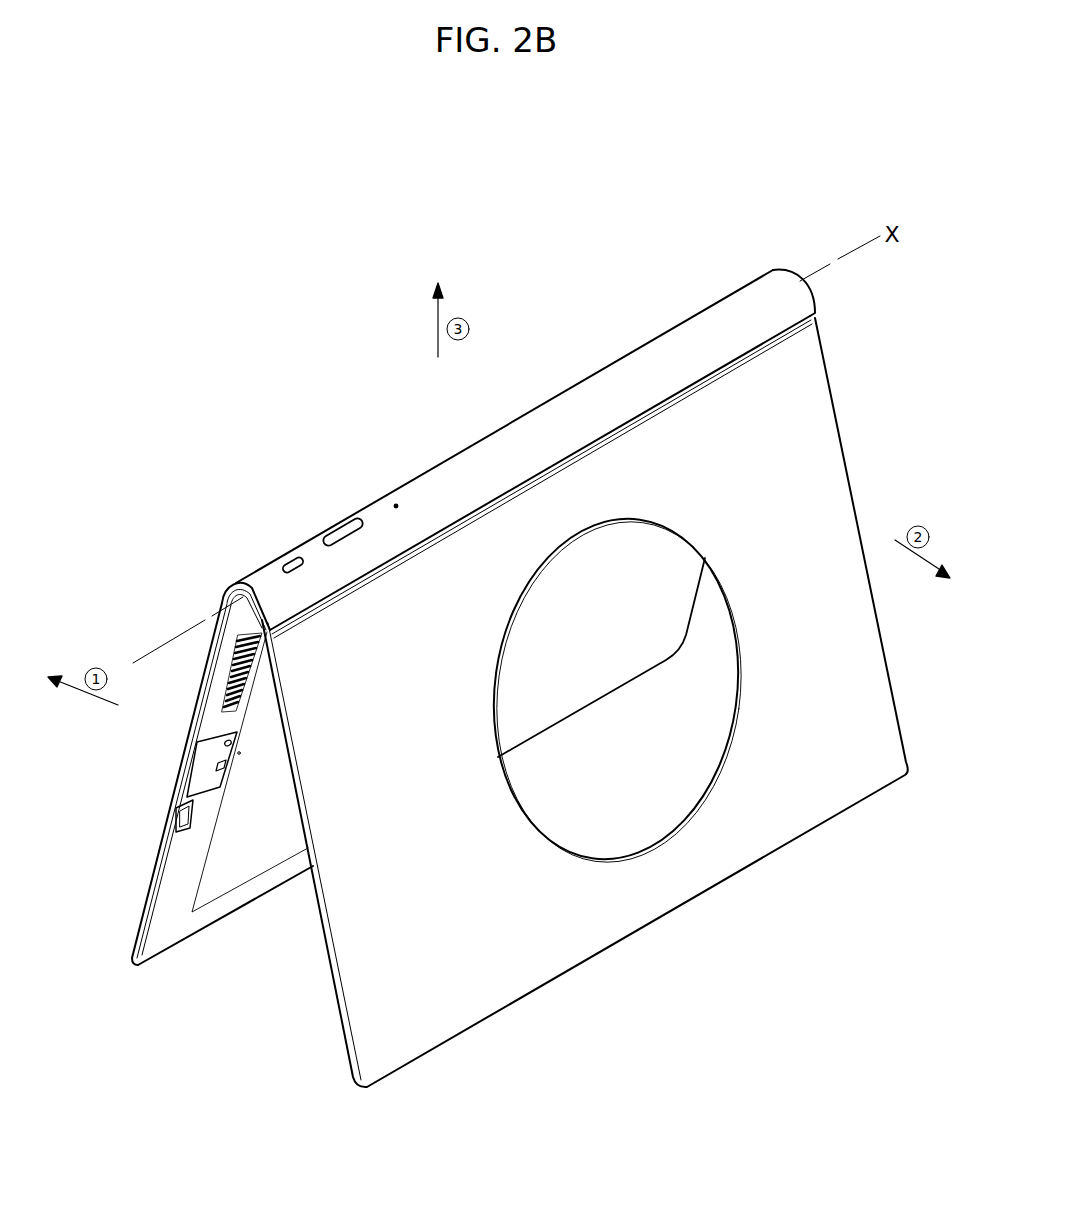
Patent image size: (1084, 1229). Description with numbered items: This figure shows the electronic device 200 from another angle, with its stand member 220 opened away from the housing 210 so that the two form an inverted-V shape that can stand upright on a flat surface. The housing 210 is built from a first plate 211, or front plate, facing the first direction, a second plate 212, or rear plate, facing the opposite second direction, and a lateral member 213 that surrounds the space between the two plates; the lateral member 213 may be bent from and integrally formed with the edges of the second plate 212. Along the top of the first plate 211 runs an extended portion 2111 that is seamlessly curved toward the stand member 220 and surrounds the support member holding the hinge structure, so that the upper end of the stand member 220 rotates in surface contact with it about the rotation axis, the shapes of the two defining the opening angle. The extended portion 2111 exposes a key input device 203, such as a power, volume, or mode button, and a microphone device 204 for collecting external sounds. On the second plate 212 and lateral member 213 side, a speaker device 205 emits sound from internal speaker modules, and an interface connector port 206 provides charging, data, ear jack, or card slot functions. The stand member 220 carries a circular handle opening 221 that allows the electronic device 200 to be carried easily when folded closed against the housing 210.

The electronic device 200 is at (206, 451).
The extended portion 2111 is at (598, 396).
The key input device 203 is at (343, 533).
The microphone device 204 is at (396, 504).
The speaker device 205 is at (230, 660).
The interface connector port 206 is at (215, 765).
The housing 210 is at (173, 761).
The first plate 211 is at (190, 716).
The second plate 212 is at (233, 865).
The lateral member 213 is at (178, 876).
The stand member 220 is at (458, 995).
The handle opening 221 is at (628, 765).